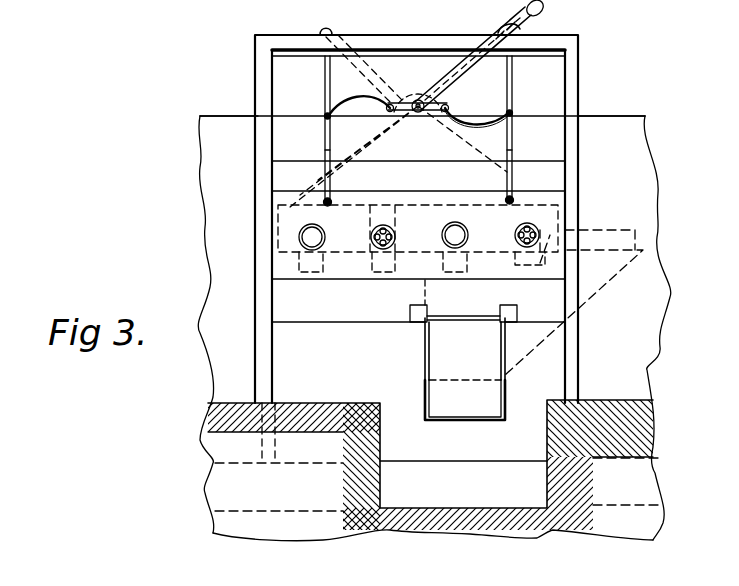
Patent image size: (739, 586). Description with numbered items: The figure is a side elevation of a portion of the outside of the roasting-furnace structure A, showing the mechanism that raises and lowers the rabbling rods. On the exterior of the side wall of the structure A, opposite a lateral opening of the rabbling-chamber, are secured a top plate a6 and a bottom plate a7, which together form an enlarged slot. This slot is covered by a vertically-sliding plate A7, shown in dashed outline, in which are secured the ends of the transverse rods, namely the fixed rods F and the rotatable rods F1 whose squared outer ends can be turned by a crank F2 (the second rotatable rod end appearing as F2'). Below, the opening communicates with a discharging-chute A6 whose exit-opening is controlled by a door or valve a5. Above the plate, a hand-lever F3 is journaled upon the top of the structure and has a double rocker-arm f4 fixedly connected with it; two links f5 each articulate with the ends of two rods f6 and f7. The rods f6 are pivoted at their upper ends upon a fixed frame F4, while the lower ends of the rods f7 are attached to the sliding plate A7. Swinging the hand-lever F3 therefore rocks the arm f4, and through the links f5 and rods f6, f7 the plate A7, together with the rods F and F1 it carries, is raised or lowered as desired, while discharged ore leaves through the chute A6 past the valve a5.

The structure A is at (434, 328).
The discharging-chute A6 is at (465, 400).
The vertically-sliding plate A7 is at (418, 238).
The door or valve a5 is at (465, 349).
The top plate a6 is at (422, 153).
The bottom plate a7 is at (463, 301).
The rod F is at (318, 238).
The rotatable rod F1 is at (396, 237).
The crank F2 is at (468, 235).
The outlet valve seat F2' is at (535, 233).
The hand-lever F3 is at (455, 73).
The fixed frame F4 is at (578, 68).
The double rocker-arm f4 is at (437, 118).
The link f5 is at (490, 116).
The rod f6 is at (513, 72).
The rod f7 is at (513, 141).